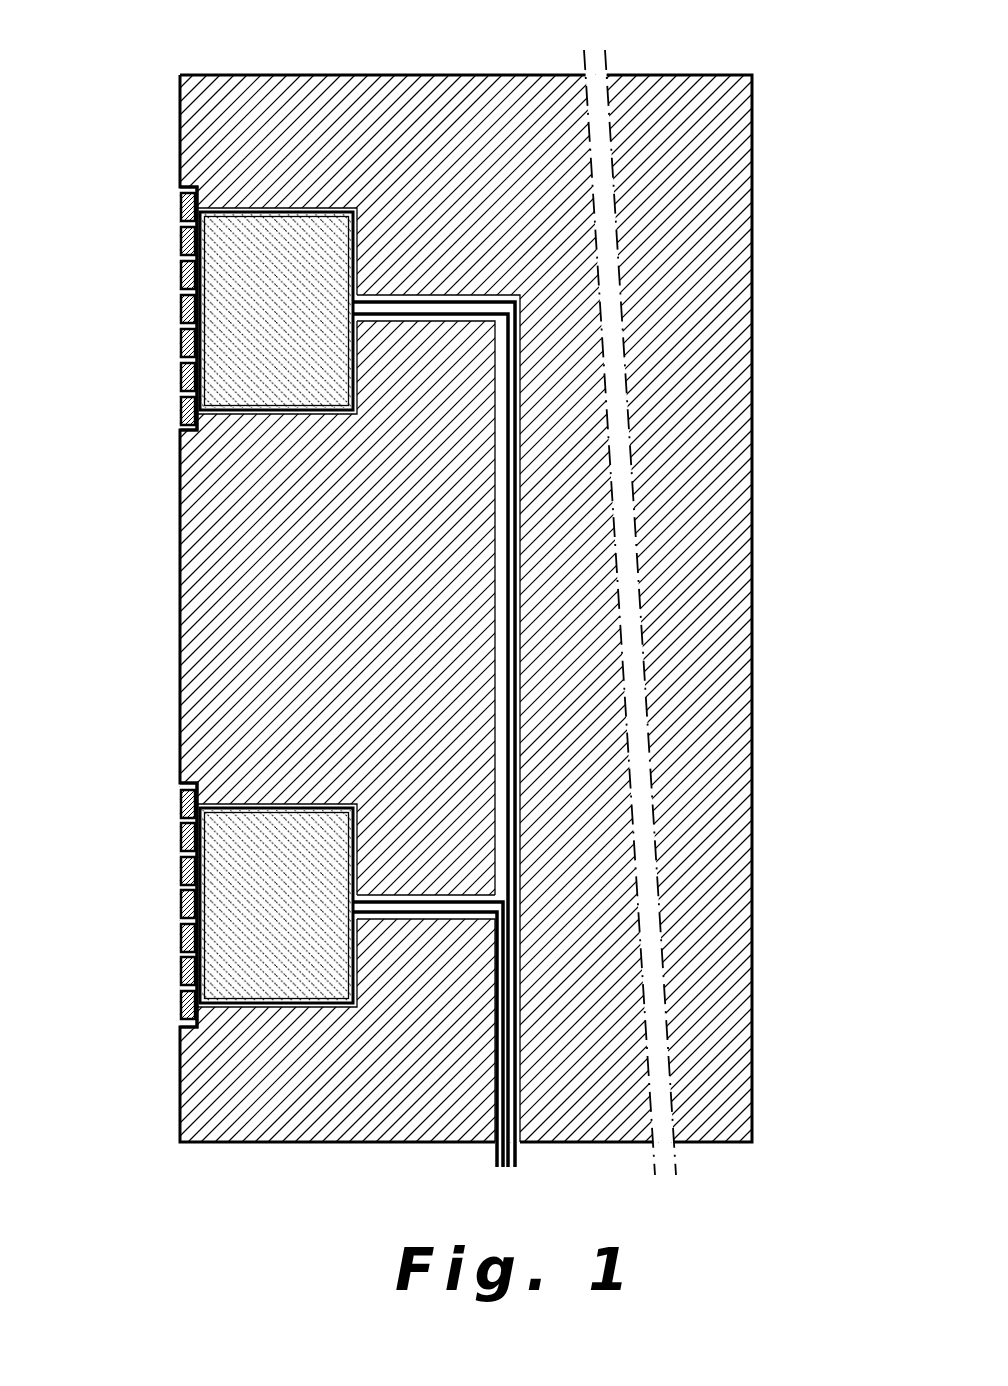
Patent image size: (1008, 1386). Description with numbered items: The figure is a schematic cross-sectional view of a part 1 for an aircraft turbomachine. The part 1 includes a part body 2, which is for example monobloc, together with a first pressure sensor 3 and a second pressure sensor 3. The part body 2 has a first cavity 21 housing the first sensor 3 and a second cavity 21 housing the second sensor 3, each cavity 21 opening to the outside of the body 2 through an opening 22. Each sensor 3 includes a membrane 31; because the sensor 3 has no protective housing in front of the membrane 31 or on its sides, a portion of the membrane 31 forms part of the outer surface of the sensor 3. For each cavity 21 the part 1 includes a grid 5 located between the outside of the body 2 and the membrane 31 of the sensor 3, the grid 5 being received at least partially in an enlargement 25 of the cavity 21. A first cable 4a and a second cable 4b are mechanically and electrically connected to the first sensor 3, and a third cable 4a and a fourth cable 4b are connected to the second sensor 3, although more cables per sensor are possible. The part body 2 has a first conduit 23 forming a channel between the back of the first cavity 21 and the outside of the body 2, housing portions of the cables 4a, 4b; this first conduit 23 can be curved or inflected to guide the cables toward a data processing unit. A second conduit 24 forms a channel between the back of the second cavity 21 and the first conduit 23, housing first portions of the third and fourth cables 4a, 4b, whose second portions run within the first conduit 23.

The part 1 is at (797, 122).
The part body 2 is at (342, 107).
The cavity 21 is at (287, 213).
The opening 22 is at (158, 304).
The first conduit 23 is at (500, 580).
The second conduit 24 is at (447, 905).
The enlargement 25 is at (190, 192).
The pressure sensor 3 is at (237, 387).
The membrane 31 is at (202, 362).
The cable 4a is at (518, 368).
The cable 4b is at (510, 405).
The grid 5 is at (187, 242).